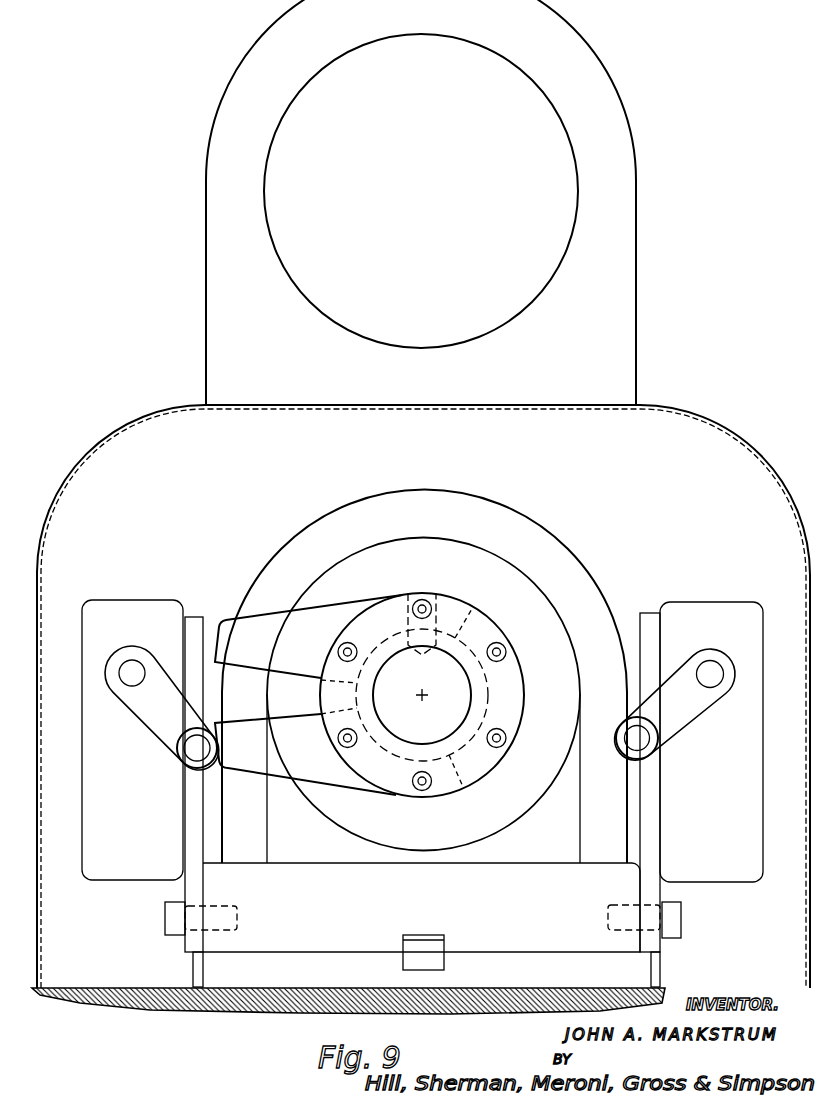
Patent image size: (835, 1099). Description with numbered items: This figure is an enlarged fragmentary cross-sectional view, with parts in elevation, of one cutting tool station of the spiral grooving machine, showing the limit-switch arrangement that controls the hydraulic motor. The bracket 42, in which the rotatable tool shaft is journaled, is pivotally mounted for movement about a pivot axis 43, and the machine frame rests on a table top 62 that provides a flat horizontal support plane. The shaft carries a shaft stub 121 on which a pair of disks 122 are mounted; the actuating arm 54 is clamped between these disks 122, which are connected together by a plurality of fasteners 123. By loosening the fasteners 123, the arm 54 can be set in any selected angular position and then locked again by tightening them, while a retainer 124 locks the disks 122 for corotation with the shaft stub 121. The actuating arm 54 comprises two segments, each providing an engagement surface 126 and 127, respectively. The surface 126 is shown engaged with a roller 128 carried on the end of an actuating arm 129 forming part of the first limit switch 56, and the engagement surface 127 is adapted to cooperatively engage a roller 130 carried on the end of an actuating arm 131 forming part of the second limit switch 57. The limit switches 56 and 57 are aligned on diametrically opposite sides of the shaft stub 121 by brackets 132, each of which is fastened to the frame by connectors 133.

The bracket 42 is at (592, 27).
The pivot axis 43 is at (424, 697).
The actuating arm 54 is at (304, 698).
The first limit switch 56 is at (130, 608).
The second limit switch 57 is at (702, 610).
The table top 62 is at (120, 988).
The shaft stub 121 is at (470, 688).
The disks 122 is at (508, 653).
The fasteners 123 is at (413, 613).
The retainer 124 is at (437, 624).
The engagement surface 126 is at (222, 766).
The engagement surface 127 is at (232, 619).
The roller 128 is at (188, 758).
The actuating arm 129 is at (165, 735).
The roller 130 is at (633, 752).
The actuating arm 131 is at (688, 713).
The brackets 132 is at (201, 879).
The connectors 133 is at (166, 923).